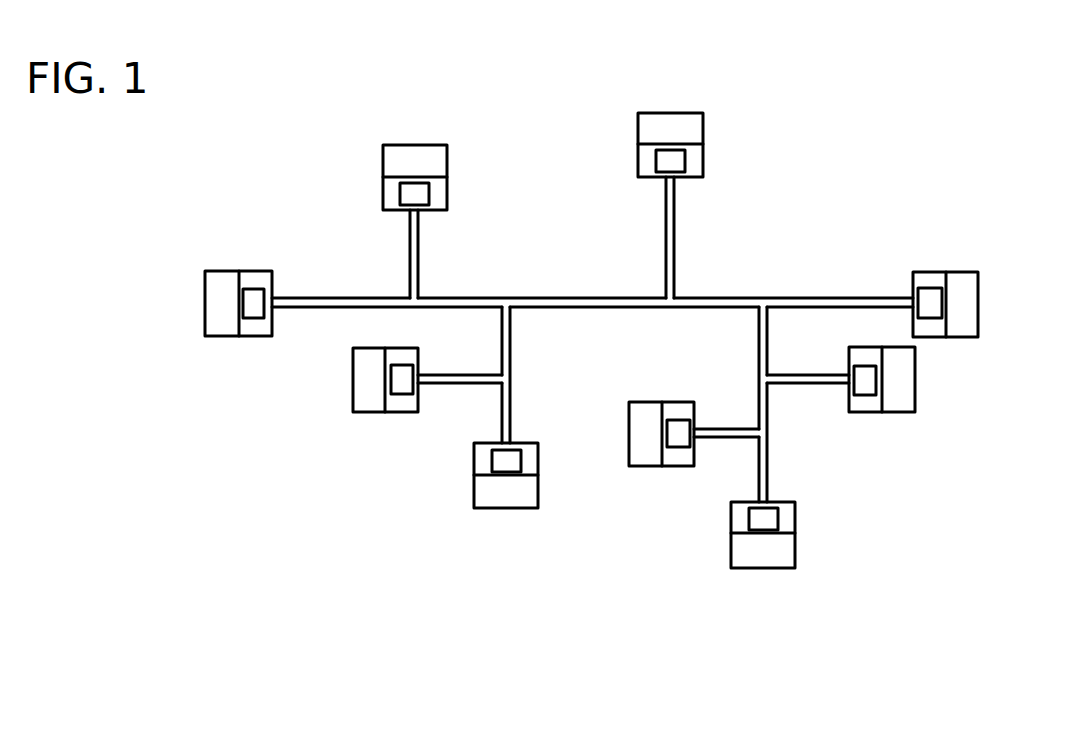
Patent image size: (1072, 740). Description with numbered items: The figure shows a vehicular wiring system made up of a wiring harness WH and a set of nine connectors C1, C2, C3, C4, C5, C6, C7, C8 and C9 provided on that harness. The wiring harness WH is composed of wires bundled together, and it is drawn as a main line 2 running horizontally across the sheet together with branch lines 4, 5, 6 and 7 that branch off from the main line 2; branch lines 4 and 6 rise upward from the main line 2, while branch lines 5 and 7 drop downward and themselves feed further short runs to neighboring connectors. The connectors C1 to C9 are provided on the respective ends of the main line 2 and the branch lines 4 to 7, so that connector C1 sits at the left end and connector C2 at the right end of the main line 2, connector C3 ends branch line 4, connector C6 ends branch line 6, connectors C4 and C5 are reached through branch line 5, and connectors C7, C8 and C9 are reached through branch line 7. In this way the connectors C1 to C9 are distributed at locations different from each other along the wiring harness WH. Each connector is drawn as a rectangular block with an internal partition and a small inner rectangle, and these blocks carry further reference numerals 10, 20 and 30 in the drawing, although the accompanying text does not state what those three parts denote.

The wiring harness WH is at (553, 265).
The main line 2 is at (318, 297).
The branch line 4 is at (422, 260).
The branch line 5 is at (513, 350).
The branch line 6 is at (677, 230).
The branch line 7 is at (757, 350).
The connector 10 is at (252, 338).
The electrical component 20 is at (222, 338).
The communication circuit 30 is at (258, 290).
The connector C1 is at (224, 250).
The connector C2 is at (990, 290).
The connector C3 is at (437, 131).
The connector C4 is at (342, 392).
The connector C5 is at (500, 522).
The connector C6 is at (690, 105).
The connector C7 is at (650, 483).
The connector C8 is at (752, 580).
The connector C9 is at (925, 390).